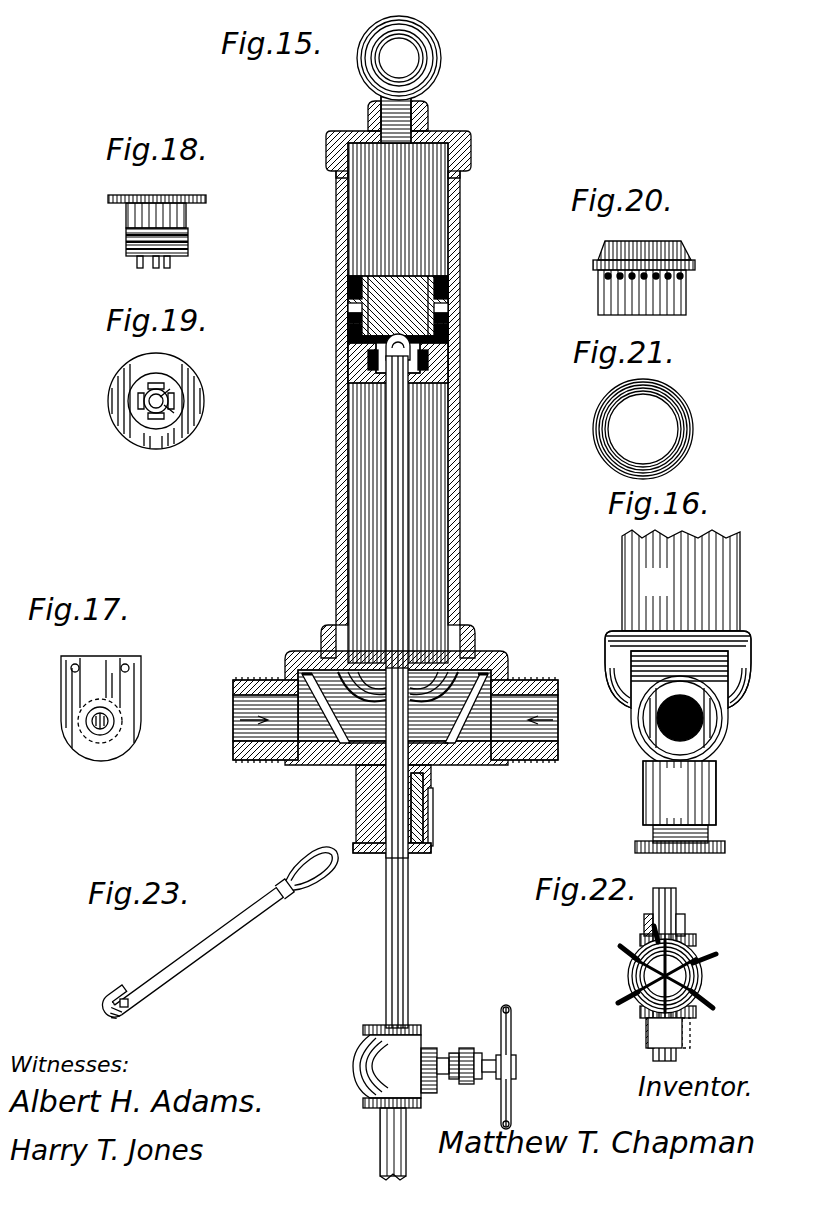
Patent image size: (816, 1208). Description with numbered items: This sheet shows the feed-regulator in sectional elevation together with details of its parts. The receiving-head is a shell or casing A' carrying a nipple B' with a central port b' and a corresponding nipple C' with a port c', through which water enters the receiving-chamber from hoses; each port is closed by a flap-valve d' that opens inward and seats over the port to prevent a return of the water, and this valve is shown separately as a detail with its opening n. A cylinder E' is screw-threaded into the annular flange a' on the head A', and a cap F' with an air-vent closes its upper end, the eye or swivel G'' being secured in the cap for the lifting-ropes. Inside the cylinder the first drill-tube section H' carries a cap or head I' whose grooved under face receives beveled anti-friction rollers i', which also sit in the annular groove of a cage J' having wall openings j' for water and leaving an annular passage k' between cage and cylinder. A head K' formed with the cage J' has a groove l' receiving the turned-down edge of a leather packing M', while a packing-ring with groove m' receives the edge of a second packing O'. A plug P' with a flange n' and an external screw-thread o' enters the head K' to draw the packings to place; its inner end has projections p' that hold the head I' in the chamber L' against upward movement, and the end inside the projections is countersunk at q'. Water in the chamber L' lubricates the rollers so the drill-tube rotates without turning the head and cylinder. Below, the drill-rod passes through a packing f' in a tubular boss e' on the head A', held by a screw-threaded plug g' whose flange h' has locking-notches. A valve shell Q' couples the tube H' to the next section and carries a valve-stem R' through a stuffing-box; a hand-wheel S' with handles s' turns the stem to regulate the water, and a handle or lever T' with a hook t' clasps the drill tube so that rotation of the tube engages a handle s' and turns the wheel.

In FIG. 15, the eye ring G'' is at (414, 79).
In FIG. 15, the cap F' is at (415, 153).
In FIG. 15, the cylinder E' is at (410, 403).
In FIG. 16, the cylinder E' is at (681, 580).
In FIG. 15, the plug P' is at (368, 291).
In FIG. 18, the plug P' is at (180, 214).
In FIG. 19, the plug P' is at (181, 378).
In FIG. 15, the packing O' is at (381, 289).
In FIG. 15, the packing M' is at (369, 309).
In FIG. 15, the flange n' is at (459, 256).
In FIG. 18, the flange n' is at (140, 195).
In FIG. 15, the groove m' is at (420, 268).
In FIG. 15, the groove l' is at (467, 283).
In FIG. 15, the anti-friction rollers i' is at (403, 334).
In FIG. 20, the anti-friction rollers i' is at (652, 253).
In FIG. 15, the annular passage k' is at (415, 340).
In FIG. 15, the openings j' is at (397, 324).
In FIG. 20, the openings j' is at (625, 283).
In FIG. 15, the chamber L' is at (442, 334).
In FIG. 15, the cap or head I' is at (357, 367).
In FIG. 22, the cap or head I' is at (651, 924).
In FIG. 15, the cage J' is at (433, 359).
In FIG. 20, the cage J' is at (659, 292).
In FIG. 15, the projections p' is at (420, 350).
In FIG. 18, the projections p' is at (155, 275).
In FIG. 19, the projections p' is at (164, 407).
In FIG. 15, the drill rod or tube H' is at (442, 692).
In FIG. 22, the drill rod or tube H' is at (683, 967).
In FIG. 15, the annular flange a' is at (409, 626).
In FIG. 15, the shell or casing A' is at (396, 695).
In FIG. 16, the shell or casing A' is at (658, 669).
In FIG. 15, the nipple C' is at (251, 720).
In FIG. 15, the nipple B' is at (539, 720).
In FIG. 16, the nipple B' is at (700, 721).
In FIG. 15, the port c' is at (362, 723).
In FIG. 15, the port b' is at (531, 723).
In FIG. 16, the port b' is at (708, 727).
In FIG. 15, the flap-valve d' is at (395, 708).
In FIG. 17, the flap-valve d' is at (113, 708).
In FIG. 15, the passage n is at (398, 731).
In FIG. 15, the packing f' is at (411, 806).
In FIG. 15, the tubular boss e' is at (434, 808).
In FIG. 16, the tubular boss e' is at (698, 793).
In FIG. 15, the screw-threaded plug g' is at (452, 817).
In FIG. 16, the screw-threaded plug g' is at (703, 825).
In FIG. 22, the screw-threaded plug g' is at (704, 954).
In FIG. 15, the flange h' is at (407, 851).
In FIG. 16, the flange h' is at (694, 851).
In FIG. 15, the valve shell or case Q' is at (360, 1102).
In FIG. 22, the valve shell or case Q' is at (691, 977).
In FIG. 15, the valve-stem R' is at (460, 1086).
In FIG. 22, the valve-stem R' is at (645, 1028).
In FIG. 15, the hand-wheel S' is at (517, 1067).
In FIG. 22, the hand-wheel S' is at (647, 976).
In FIG. 15, the handles s' is at (518, 1063).
In FIG. 22, the handles s' is at (663, 974).
In FIG. 18, the screw-thread o' is at (140, 240).
In FIG. 19, the screw-thread o' is at (174, 401).
In FIG. 21, the screw-thread o' is at (632, 429).
In FIG. 19, the countersink q' is at (126, 397).
In FIG. 20, the head K' is at (632, 247).
In FIG. 23, the handle or lever T' is at (221, 933).
In FIG. 23, the hook t' is at (135, 983).